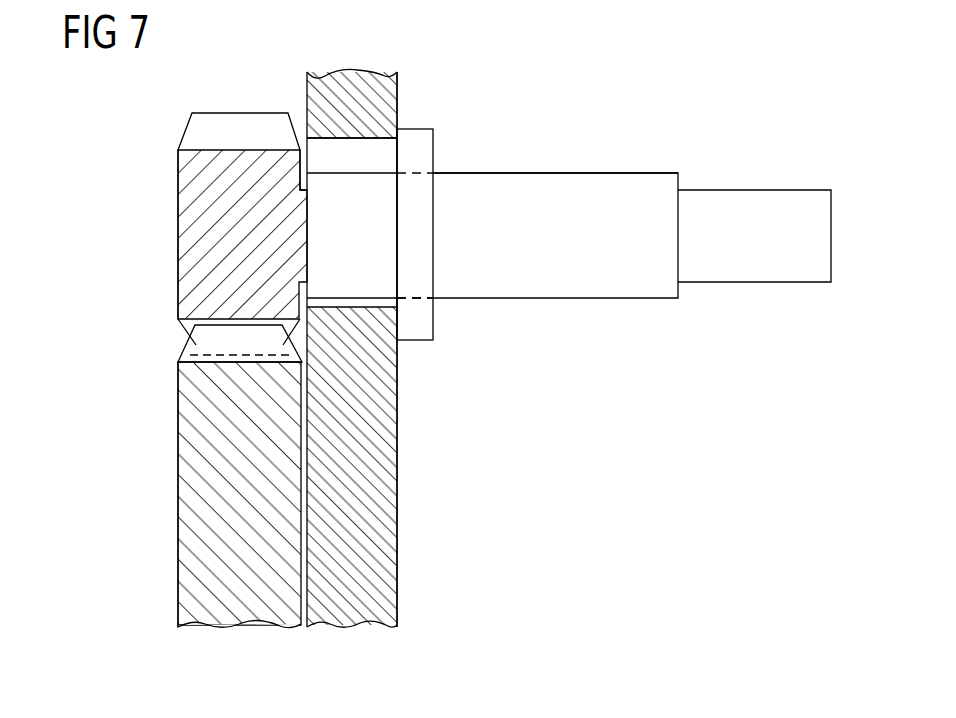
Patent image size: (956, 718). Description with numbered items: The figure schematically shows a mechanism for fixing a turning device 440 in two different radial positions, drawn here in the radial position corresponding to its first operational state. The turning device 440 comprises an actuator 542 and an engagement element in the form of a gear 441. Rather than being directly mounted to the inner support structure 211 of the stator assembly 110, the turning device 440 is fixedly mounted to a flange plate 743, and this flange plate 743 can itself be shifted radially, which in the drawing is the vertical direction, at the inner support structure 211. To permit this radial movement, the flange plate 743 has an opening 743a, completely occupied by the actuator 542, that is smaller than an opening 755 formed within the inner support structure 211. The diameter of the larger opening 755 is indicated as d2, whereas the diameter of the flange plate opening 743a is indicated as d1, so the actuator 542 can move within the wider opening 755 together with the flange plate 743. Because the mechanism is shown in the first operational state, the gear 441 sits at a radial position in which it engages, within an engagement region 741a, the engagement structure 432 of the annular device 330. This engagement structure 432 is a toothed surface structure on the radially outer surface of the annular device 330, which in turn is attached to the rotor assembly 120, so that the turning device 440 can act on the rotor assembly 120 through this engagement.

The stator assembly 110 is at (417, 538).
The rotor assembly 120 is at (160, 532).
The inner support structure 211 is at (390, 482).
The annular device 330 is at (182, 428).
The engagement structure 432 is at (185, 353).
The turning device 440 is at (726, 181).
The engagement element 441 is at (180, 233).
The actuator 542 is at (597, 187).
The engagement region 741a is at (166, 278).
The flange plate 743 is at (415, 342).
The opening of the flange plate 743a is at (413, 299).
The opening 755 is at (305, 166).
The diameter of the flange plate opening d1 is at (373, 172).
The diameter of the support structure opening d2 is at (334, 136).